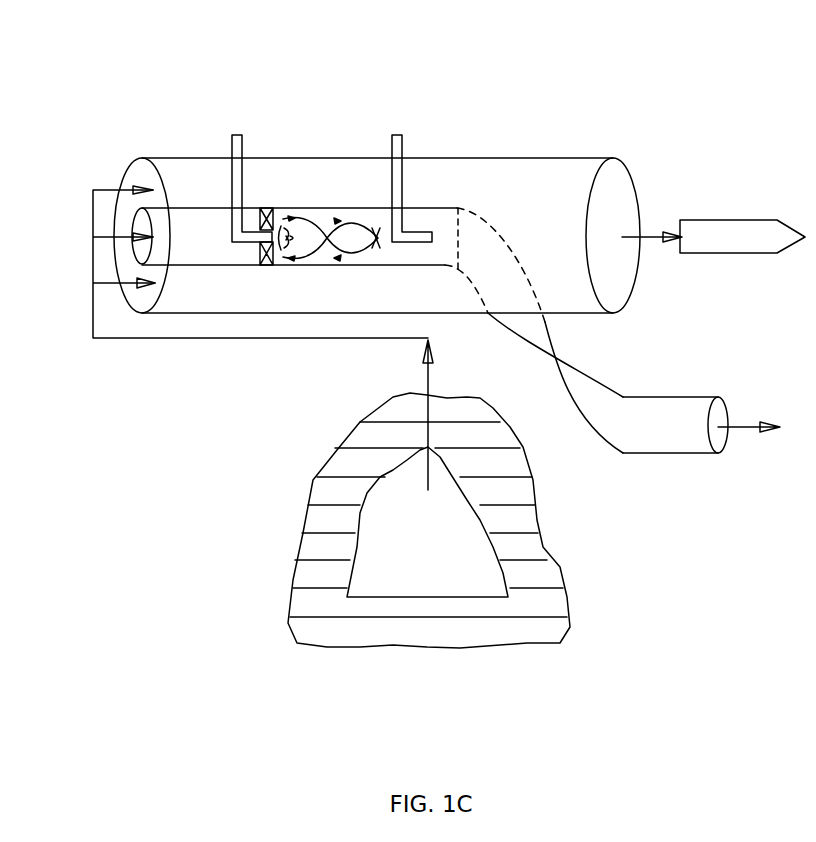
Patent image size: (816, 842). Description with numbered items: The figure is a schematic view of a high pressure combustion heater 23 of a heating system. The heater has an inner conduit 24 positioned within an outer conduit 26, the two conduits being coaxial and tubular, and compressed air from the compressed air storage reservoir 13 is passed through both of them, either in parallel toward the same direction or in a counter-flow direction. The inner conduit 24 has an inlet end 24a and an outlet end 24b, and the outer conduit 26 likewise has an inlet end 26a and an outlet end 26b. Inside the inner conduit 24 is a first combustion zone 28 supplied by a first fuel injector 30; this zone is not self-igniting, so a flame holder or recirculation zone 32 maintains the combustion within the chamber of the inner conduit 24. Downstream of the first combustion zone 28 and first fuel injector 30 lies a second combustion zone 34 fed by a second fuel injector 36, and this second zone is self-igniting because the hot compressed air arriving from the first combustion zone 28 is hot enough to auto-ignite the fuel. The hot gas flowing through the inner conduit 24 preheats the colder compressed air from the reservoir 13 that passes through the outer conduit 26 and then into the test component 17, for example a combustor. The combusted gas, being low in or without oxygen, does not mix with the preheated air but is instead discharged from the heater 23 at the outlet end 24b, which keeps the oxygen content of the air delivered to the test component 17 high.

The high pressure combustion heater 23 is at (143, 80).
The compressed air storage reservoir 13 is at (378, 543).
The test component 17 is at (728, 223).
The inner conduit 24 is at (207, 207).
The inlet end of inner conduit 24a is at (138, 222).
The outlet end of inner conduit 24b is at (722, 410).
The outer conduit 26 is at (552, 158).
The inlet end of outer conduit 26a is at (140, 175).
The outlet end of outer conduit 26b is at (622, 187).
The first combustion zone 28 is at (318, 218).
The first fuel injector 30 is at (243, 147).
The flame holder or recirculation zone 32 is at (270, 258).
The second combustion zone 34 is at (447, 230).
The second fuel injector 36 is at (402, 143).